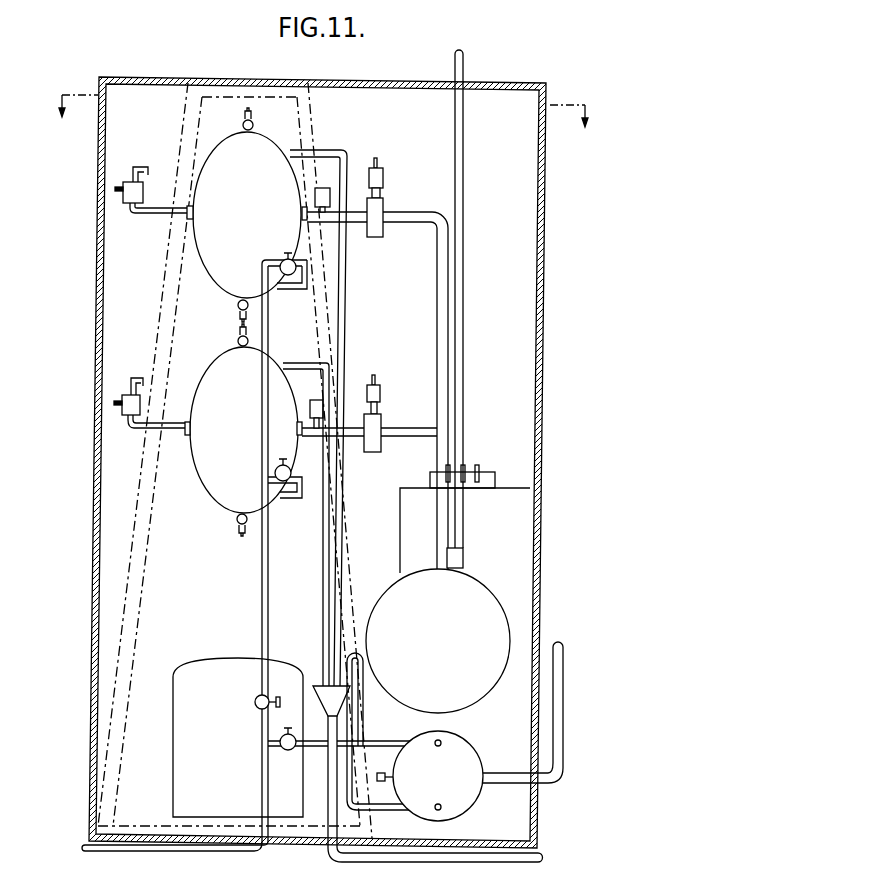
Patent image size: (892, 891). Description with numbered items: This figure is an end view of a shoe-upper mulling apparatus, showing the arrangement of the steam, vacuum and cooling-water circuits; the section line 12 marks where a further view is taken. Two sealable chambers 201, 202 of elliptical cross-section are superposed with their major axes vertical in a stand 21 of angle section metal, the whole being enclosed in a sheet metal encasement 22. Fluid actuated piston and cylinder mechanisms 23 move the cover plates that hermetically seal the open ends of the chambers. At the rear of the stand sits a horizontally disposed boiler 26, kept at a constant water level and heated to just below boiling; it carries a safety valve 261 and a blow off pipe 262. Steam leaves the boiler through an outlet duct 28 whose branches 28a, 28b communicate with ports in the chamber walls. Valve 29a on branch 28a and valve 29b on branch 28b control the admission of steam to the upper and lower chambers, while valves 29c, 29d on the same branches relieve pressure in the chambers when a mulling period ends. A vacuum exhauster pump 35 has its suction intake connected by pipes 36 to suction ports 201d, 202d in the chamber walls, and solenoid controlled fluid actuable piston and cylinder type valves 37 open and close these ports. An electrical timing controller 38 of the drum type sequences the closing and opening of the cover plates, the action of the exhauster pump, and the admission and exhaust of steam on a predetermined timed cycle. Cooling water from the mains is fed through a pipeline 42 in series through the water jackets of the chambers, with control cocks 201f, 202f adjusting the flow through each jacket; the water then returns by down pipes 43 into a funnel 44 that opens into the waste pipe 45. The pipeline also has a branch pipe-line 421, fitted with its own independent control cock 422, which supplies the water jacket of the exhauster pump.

The section line 12- 12 is at (326, 125).
The stand 21 is at (135, 632).
The sheet metal encasement 22 is at (538, 250).
The fluid actuated piston and cylinder mechanisms 23 is at (253, 125).
The boiler 26 is at (450, 651).
The outlet duct 28 is at (442, 307).
The branch 28a is at (417, 217).
The branch 28b is at (402, 430).
The valve 29a is at (381, 174).
The valve 29b is at (374, 392).
The valve 29c is at (328, 188).
The valve 29d is at (318, 400).
The vacuum exhauster pump 35 is at (445, 794).
The pipes 36 is at (147, 166).
The solenoid controlled fluid actuable piston and cylinder type valves 37 is at (122, 194).
The electrical timing controller 38 is at (486, 482).
The pipeline 42 is at (269, 584).
The down pipes 43 is at (338, 532).
The funnel 44 is at (330, 700).
The waste pipe 45 is at (510, 864).
The sealable chamber 201 is at (268, 178).
The port 201d is at (185, 218).
The control cock 201f is at (282, 262).
The sealable chamber 202 is at (260, 404).
The port 202d is at (183, 440).
The control cock 202f is at (277, 472).
The safety valve 261 is at (464, 551).
The blow off pipe 262 is at (456, 70).
The branch pipe-line 421 is at (313, 748).
The control cock 422 is at (280, 745).